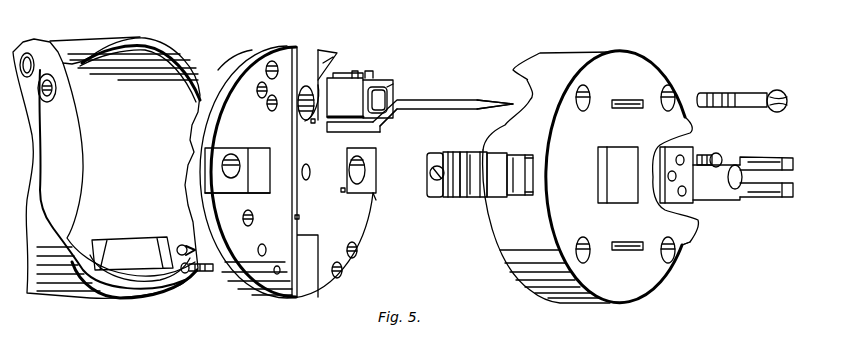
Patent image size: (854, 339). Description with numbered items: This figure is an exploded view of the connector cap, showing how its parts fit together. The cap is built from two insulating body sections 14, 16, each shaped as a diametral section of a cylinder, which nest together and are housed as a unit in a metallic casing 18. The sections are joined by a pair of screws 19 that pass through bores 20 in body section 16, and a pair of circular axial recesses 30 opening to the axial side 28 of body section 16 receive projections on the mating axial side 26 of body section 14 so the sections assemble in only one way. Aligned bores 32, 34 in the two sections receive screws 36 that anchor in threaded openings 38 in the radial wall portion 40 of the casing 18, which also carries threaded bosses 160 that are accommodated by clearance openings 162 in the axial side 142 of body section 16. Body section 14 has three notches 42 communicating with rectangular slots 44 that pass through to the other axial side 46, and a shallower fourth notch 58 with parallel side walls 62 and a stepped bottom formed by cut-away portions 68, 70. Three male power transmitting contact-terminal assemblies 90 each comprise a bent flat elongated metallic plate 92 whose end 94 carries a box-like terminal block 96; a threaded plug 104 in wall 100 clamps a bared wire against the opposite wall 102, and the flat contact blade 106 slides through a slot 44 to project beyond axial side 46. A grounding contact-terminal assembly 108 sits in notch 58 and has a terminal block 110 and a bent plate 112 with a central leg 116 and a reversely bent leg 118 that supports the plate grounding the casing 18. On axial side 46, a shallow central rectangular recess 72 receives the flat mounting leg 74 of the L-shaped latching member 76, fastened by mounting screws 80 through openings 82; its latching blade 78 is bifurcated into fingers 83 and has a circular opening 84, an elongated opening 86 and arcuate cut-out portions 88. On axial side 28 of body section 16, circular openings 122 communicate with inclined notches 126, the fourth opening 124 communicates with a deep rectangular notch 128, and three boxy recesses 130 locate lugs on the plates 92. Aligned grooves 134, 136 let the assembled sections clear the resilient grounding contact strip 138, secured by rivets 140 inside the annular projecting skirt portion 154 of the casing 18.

The body section 14 is at (545, 50).
The body section 16 is at (247, 58).
The metallic casing 18 is at (62, 44).
The screws 19 is at (200, 271).
The bores 20 is at (280, 270).
The axial side 26 is at (492, 240).
The axial side 28 is at (366, 220).
The circular axial recesses 30 is at (303, 165).
The bores 32 is at (665, 88).
The bores 34 is at (262, 98).
The screws 36 is at (718, 92).
The threaded openings 38 is at (28, 54).
The radial wall portion 40 is at (76, 186).
The notches 42 is at (580, 52).
The rectangular slots 44 is at (633, 108).
The axial side 46 is at (560, 230).
The fourth notch 58 is at (518, 155).
The side walls 62 is at (497, 154).
The cut-away portion 68 is at (518, 196).
The cut-away portion 70 is at (530, 187).
The central rectangular recess 72 is at (603, 200).
The mounting leg 74 is at (700, 202).
The latching member 76 is at (725, 200).
The latching blade 78 is at (742, 157).
The mounting screws 80 is at (704, 154).
The openings 82 is at (686, 190).
The fingers 83 is at (788, 157).
The circular opening 84 is at (740, 190).
The elongated opening 86 is at (785, 197).
The arcuate cut-out portions 88 is at (757, 158).
The male power transmitting contact-terminal assemblies 90 is at (433, 100).
The bent flat elongated metallic plate 92 is at (405, 118).
The end 94 is at (375, 132).
The terminal block 96 is at (342, 88).
The wall 100 is at (400, 82).
The wall 102 is at (392, 86).
The threaded plug 104 is at (367, 73).
The contact blade 106 is at (471, 100).
The grounding contact-terminal assembly 108 is at (448, 197).
The terminal block 110 is at (432, 195).
The bent plate 112 is at (475, 152).
The central leg 116 is at (470, 197).
The reversely bent leg 118 is at (448, 153).
The circular openings 122 is at (326, 50).
The circular opening 124 is at (245, 162).
The inclined notches 126 is at (296, 48).
The deep rectangular notch 128 is at (260, 193).
The boxy recesses 130 is at (299, 217).
The groove 134 is at (681, 268).
The groove 136 is at (342, 270).
The grounding contact strip 138 is at (130, 248).
The rivets 140 is at (183, 245).
The axial side 142 is at (220, 66).
The annular projecting skirt portion 154 is at (142, 46).
The threaded bosses 160 is at (60, 90).
The clearance openings 162 is at (287, 54).